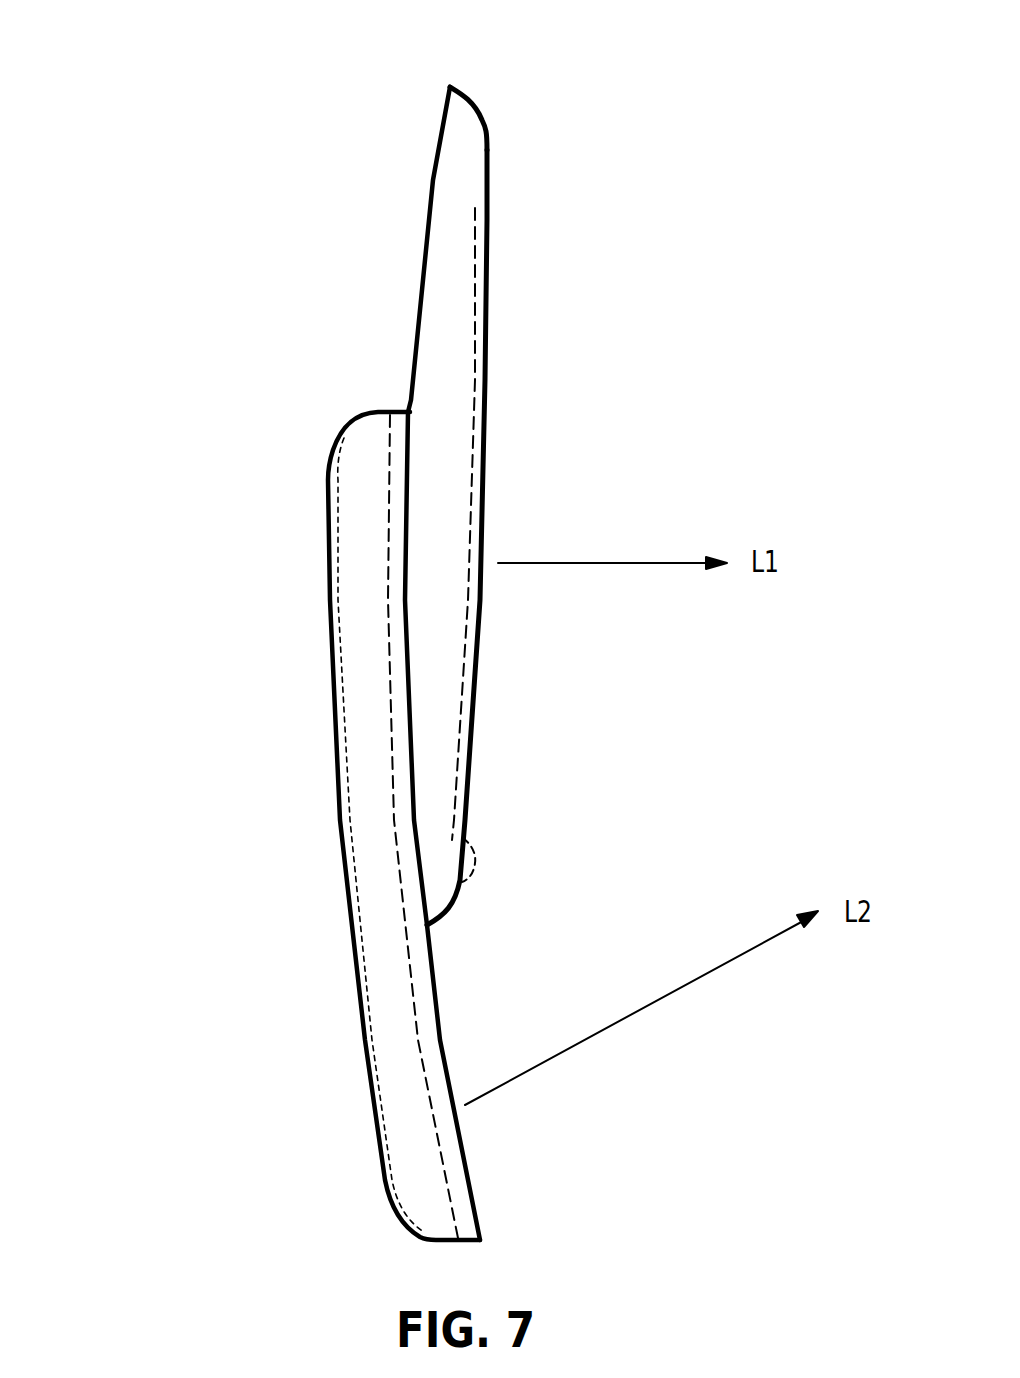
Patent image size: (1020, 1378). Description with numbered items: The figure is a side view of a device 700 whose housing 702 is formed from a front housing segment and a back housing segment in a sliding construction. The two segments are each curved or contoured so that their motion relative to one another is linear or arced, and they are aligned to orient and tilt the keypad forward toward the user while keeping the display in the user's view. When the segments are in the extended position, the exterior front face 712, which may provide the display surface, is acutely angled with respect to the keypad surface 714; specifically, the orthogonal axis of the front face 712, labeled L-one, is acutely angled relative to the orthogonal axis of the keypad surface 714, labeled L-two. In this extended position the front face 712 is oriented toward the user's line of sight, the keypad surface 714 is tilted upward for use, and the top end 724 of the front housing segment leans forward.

The device 700 is at (365, 621).
The housing 702 is at (348, 799).
The exterior front face 712 is at (493, 463).
The keypad surface 714 is at (440, 1005).
The top end 724 is at (450, 85).